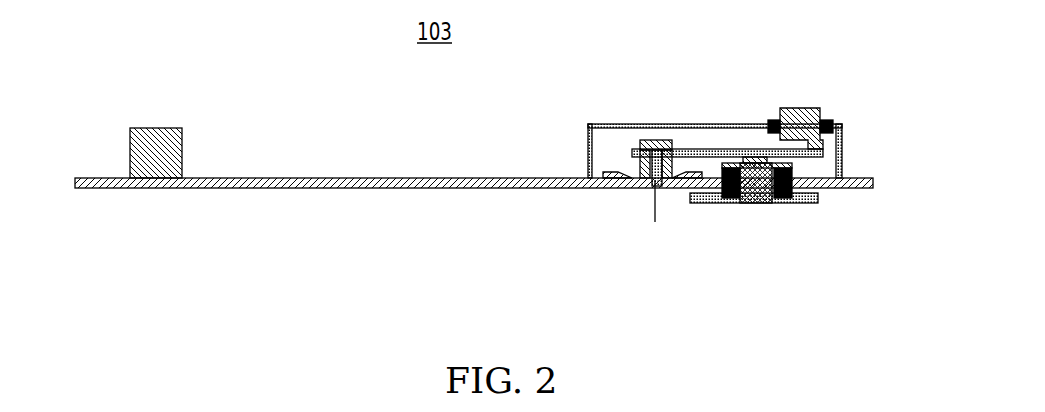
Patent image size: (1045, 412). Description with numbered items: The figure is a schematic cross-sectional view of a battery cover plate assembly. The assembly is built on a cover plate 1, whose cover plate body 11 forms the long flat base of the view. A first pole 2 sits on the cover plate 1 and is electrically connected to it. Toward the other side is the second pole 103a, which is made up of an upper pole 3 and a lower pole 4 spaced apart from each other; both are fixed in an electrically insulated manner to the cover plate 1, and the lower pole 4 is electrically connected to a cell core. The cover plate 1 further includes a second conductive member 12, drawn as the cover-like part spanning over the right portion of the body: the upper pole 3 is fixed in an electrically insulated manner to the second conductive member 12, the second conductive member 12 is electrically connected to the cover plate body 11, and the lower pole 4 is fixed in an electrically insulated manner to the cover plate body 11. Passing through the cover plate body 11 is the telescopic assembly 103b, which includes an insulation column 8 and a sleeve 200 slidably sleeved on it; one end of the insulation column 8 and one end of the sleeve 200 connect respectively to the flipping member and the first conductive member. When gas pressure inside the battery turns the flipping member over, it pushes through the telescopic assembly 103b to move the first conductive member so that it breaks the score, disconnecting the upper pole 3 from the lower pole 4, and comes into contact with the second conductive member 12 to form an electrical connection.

The cover plate 1 is at (501, 178).
The first pole 2 is at (163, 128).
The upper pole 3 is at (798, 142).
The lower pole 4 is at (760, 203).
The insulation column 8 is at (667, 187).
The cover plate body 11 is at (402, 176).
The second conductive member 12 is at (643, 125).
The second pole 103a is at (838, 264).
The telescopic assembly 103b is at (677, 279).
The sleeve 200 is at (630, 187).